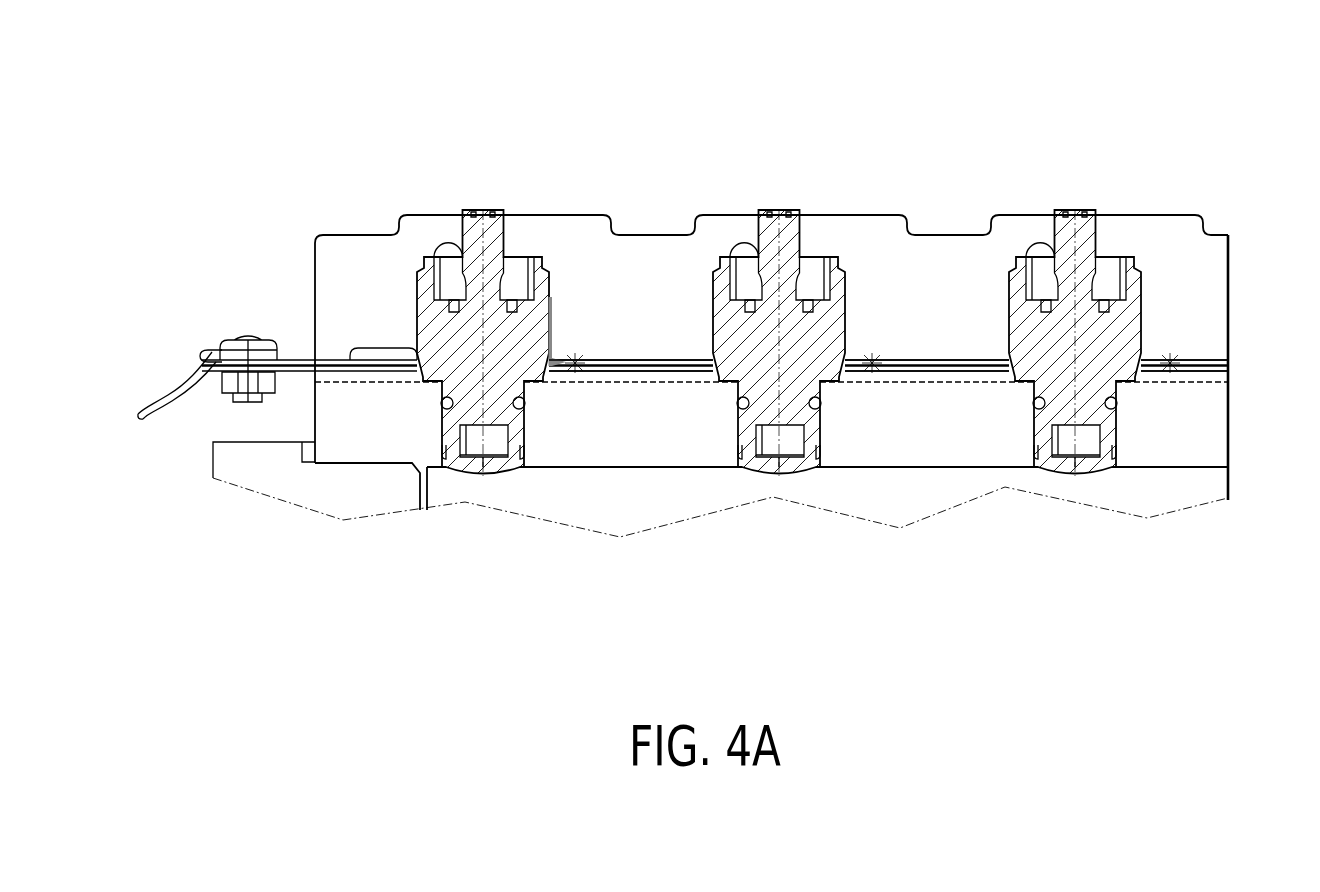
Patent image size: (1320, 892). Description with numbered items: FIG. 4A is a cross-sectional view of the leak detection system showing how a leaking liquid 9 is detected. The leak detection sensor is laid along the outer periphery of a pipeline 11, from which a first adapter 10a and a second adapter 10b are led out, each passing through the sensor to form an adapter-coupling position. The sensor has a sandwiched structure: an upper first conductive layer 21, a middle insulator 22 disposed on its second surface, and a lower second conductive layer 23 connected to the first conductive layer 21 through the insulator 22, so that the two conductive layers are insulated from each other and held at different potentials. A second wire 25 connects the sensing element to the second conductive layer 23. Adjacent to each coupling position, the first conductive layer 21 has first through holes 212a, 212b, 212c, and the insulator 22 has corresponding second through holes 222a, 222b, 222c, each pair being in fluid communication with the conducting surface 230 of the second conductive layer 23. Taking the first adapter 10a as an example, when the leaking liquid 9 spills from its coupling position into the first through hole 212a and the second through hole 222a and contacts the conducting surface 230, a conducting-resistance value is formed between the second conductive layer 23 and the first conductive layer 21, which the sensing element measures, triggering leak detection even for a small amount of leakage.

The leaking liquid 9 is at (553, 358).
The first adapter 10a is at (488, 210).
The second adapter 10b is at (786, 210).
The pipeline 11 is at (492, 490).
The first conductive layer 21 is at (313, 360).
The insulator 22 is at (315, 378).
The second conductive layer 23 is at (323, 375).
The second wire 25 is at (195, 360).
The first through hole 212a is at (577, 360).
The first through hole 212b is at (878, 358).
The first through hole 212c is at (1172, 354).
The second through hole 222a is at (581, 372).
The second through hole 222b is at (883, 372).
The second through hole 222c is at (1186, 368).
The conducting surface 230 is at (572, 378).